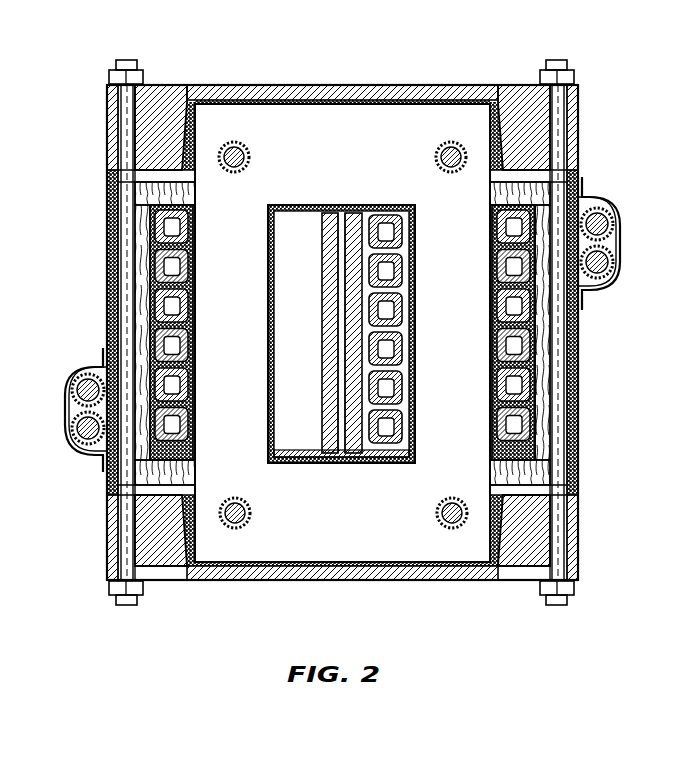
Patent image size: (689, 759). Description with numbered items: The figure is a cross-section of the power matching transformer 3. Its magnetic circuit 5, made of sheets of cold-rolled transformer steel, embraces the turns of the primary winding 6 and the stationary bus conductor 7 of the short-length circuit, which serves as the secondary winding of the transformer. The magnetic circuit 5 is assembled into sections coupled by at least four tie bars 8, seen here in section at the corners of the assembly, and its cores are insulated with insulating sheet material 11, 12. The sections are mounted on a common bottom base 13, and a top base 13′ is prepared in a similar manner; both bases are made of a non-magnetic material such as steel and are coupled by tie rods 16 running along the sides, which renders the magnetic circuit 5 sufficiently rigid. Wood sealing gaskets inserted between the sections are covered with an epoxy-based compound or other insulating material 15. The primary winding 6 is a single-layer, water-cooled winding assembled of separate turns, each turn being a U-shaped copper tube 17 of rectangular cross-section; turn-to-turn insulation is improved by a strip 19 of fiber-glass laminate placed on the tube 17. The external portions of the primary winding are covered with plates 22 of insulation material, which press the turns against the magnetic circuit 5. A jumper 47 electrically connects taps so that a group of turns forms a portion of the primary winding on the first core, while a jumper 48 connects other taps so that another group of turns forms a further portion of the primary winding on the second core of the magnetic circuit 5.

The power matching transformer 3 is at (224, 581).
The magnetic circuit 5 is at (377, 128).
The primary winding 6 is at (165, 262).
The stationary bus conductor 7 is at (321, 207).
The tie bar 8 is at (237, 173).
The insulating sheet material 11 is at (348, 207).
The insulating sheet material 12 is at (194, 258).
The common base 13 is at (505, 568).
The top base 13′ is at (272, 85).
The insulating material 15 is at (382, 100).
The tie rod 16 is at (559, 129).
The U-shaped copper tube 17 is at (380, 213).
The strip 19 is at (405, 404).
The plate 22 is at (489, 192).
The jumper 47 is at (82, 424).
The jumper 48 is at (604, 256).